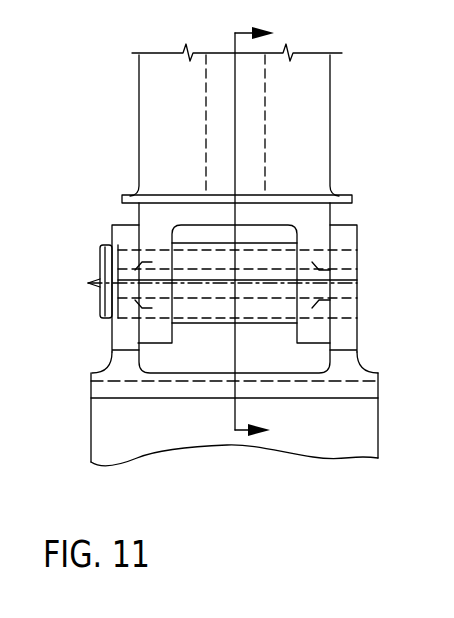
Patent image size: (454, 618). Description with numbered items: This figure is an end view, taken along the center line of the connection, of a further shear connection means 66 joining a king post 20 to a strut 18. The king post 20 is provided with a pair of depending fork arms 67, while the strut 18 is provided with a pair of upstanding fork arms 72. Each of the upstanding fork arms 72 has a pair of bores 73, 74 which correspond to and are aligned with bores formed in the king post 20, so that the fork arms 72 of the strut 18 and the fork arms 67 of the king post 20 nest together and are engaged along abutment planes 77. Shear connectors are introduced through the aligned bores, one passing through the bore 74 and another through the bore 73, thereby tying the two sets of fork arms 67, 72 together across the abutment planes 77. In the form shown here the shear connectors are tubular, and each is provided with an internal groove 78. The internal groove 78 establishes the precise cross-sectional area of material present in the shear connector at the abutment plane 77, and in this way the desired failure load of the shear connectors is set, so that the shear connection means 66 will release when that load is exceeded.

The strut 18 is at (173, 437).
The king post 20 is at (313, 108).
The shear connection means 66 is at (378, 223).
The depending fork arms 67 is at (162, 262).
The upstanding fork arms 72 is at (122, 333).
The bore 73 is at (343, 252).
The bore 74 is at (125, 250).
The abutment planes 77 is at (136, 246).
The internal groove 78 is at (150, 262).